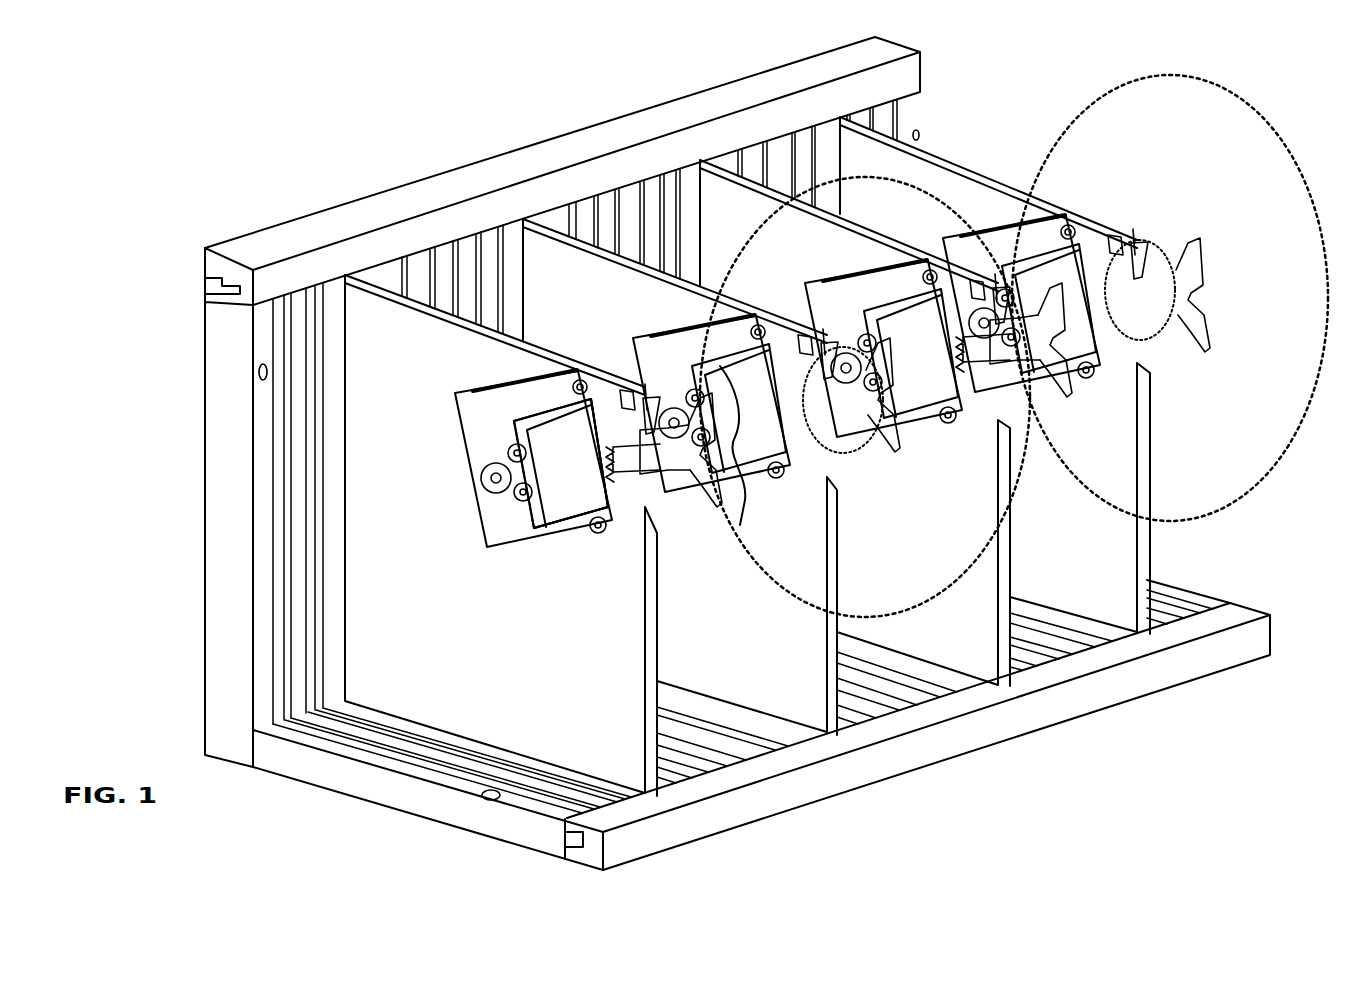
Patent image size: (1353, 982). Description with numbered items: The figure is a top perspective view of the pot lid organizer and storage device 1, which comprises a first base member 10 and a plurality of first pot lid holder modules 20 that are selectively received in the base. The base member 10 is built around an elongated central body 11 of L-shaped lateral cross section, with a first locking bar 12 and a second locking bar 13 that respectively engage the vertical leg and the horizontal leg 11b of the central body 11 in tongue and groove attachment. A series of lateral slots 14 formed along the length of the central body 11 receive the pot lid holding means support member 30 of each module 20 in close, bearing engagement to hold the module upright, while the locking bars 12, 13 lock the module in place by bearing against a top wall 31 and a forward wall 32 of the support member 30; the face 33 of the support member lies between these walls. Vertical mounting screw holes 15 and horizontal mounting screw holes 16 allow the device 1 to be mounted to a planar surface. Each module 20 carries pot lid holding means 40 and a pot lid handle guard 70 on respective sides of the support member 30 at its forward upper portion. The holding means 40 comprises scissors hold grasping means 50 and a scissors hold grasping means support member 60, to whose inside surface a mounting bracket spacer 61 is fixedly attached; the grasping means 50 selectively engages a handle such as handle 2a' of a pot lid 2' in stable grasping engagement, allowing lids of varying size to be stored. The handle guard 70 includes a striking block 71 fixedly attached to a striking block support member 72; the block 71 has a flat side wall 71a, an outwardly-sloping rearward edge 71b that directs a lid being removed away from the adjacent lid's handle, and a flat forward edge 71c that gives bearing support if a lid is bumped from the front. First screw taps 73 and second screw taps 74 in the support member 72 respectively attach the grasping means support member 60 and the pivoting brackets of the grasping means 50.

The pot lid organizer and storage device 1 is at (1003, 122).
The pot lid 2' is at (1014, 335).
The pot lid handle 2a' is at (1004, 400).
The first base member 10 is at (198, 519).
The elongated central body 11 is at (267, 747).
The horizontal leg 11b is at (545, 835).
The first locking bar 12 is at (567, 153).
The second locking bar 13 is at (900, 755).
The lateral slots 14 is at (280, 317).
The vertical mounting screw holes 15 is at (257, 367).
The horizontal mounting screw holes 16 is at (482, 797).
The first pot lid holder module 20 is at (836, 425).
The pot lid holding means support member 30 is at (536, 535).
The top wall 31 is at (563, 355).
The forward wall 32 is at (653, 678).
The plate face 33 is at (495, 534).
The pot lid holding means 40 is at (1160, 200).
The scissors hold grasping means 50 is at (664, 463).
The scissors hold grasping means support member 60 is at (613, 372).
The mounting bracket spacer 61 is at (650, 418).
The pot lid handle guard 70 is at (808, 400).
The striking block 71 is at (543, 418).
The flat side wall 71a is at (561, 463).
The outwardly-sloping rearward edge 71b is at (540, 522).
The flat forward edge 71c is at (612, 449).
The striking block support member 72 is at (483, 397).
The first screw taps 73 is at (581, 385).
The second screw taps 74 is at (510, 445).